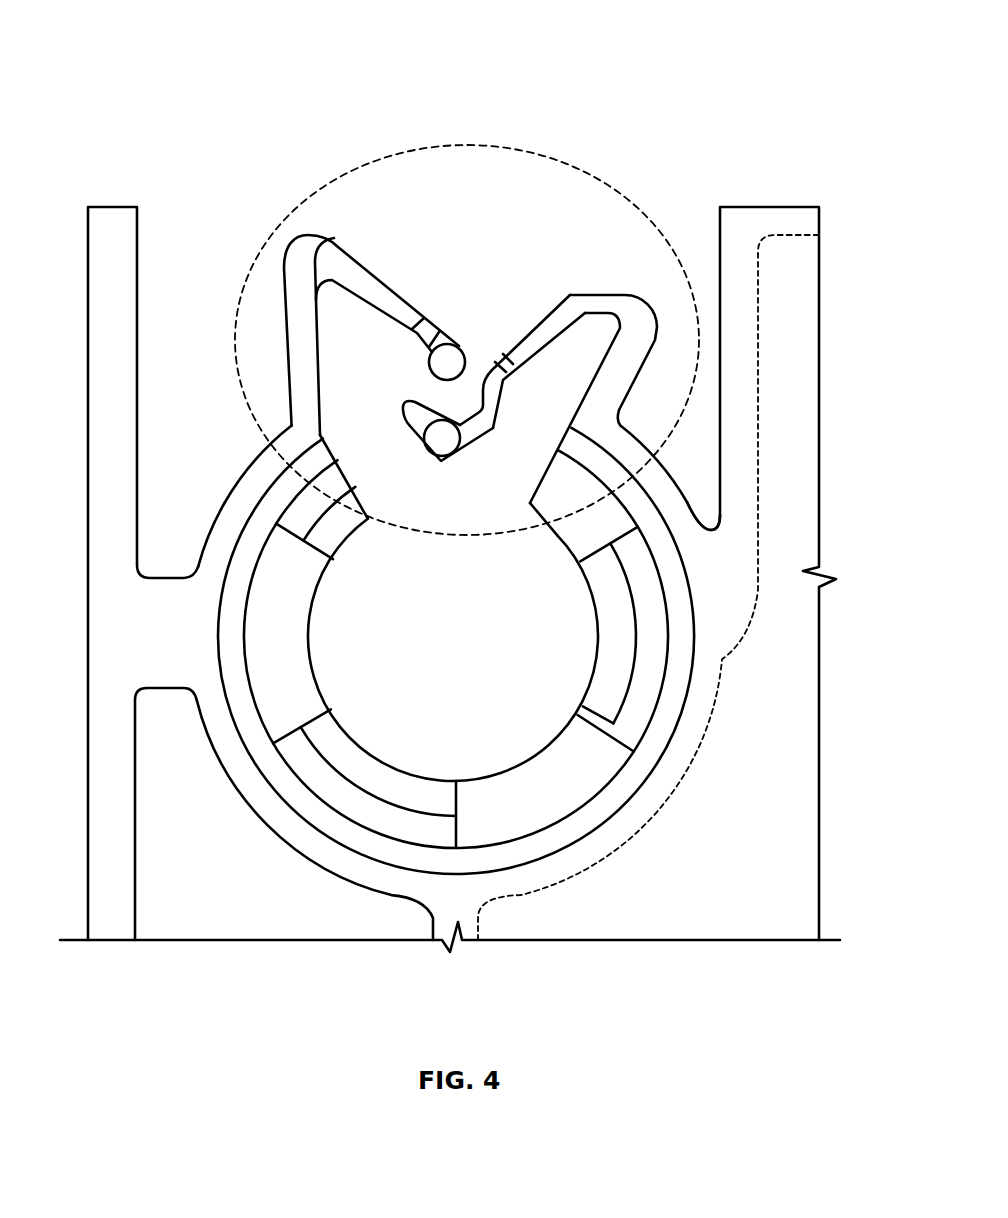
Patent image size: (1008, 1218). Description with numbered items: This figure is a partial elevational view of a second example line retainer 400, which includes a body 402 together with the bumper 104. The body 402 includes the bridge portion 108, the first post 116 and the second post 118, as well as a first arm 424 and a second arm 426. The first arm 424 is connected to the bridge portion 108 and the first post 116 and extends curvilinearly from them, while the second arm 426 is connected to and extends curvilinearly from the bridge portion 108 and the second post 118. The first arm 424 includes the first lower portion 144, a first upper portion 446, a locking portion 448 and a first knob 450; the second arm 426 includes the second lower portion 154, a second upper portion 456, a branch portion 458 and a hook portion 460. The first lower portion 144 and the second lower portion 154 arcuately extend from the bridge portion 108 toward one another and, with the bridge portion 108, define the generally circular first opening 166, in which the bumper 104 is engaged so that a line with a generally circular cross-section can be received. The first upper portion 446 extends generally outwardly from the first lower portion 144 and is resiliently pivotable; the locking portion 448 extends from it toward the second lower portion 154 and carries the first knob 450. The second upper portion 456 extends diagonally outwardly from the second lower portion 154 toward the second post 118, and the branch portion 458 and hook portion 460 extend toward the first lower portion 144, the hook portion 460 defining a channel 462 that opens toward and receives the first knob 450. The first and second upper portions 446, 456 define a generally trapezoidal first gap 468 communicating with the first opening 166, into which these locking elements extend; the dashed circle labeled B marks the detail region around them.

The line retainer 400 is at (148, 42).
The first post 116 is at (118, 215).
The second post 118 is at (775, 222).
The body 402 is at (88, 745).
The bridge portion 108 is at (217, 900).
The first lower portion 144 is at (227, 513).
The first arm 424 is at (210, 565).
The second lower portion 154 is at (667, 494).
The second arm 426 is at (682, 523).
The bumper 104 is at (258, 617).
The first opening 166 is at (476, 630).
The first gap 468 is at (483, 337).
The first upper portion 446 is at (297, 257).
The locking portion 448 is at (338, 262).
The first knob 450 is at (447, 362).
The second upper portion 456 is at (640, 343).
The branch portion 458 is at (547, 333).
The hook portion 460 is at (473, 432).
The channel 462 is at (445, 410).
The detail region B is at (452, 143).